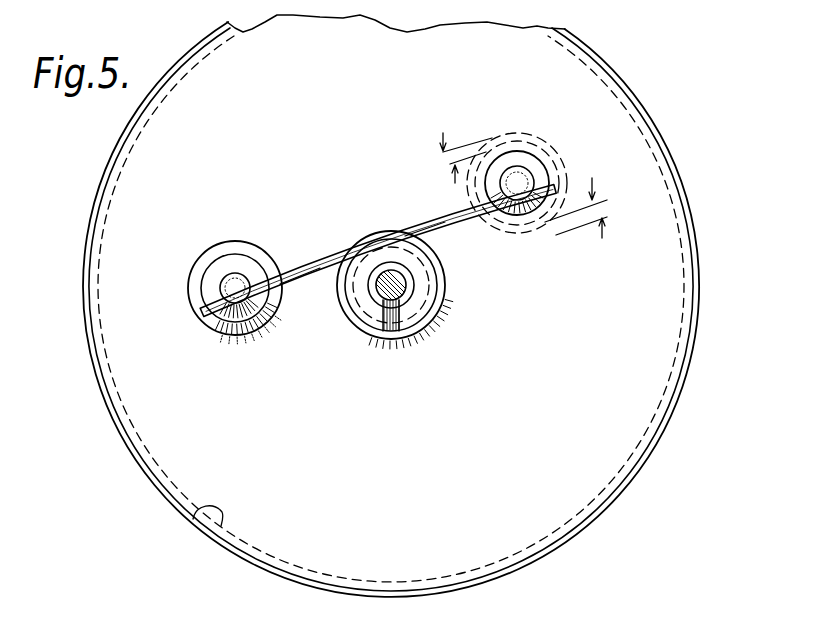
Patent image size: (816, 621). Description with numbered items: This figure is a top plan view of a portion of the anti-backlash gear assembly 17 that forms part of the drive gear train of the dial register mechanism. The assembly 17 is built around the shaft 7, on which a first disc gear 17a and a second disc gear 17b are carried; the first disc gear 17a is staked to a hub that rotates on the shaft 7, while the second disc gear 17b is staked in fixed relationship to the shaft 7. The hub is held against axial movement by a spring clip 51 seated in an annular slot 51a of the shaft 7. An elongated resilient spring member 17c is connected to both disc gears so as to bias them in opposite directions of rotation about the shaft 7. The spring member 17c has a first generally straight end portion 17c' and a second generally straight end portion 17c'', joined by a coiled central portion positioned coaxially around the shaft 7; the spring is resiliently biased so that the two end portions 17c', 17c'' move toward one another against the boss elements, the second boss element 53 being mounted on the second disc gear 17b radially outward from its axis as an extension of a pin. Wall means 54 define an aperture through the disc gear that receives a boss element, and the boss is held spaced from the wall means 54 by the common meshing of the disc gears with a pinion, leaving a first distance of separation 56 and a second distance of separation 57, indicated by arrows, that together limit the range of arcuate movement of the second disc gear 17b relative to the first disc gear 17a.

The shaft 7 is at (380, 292).
The anti-backlash gear assembly 17 is at (694, 518).
The first disc gear 17a is at (460, 491).
The second disc gear 17b is at (190, 520).
The spring member 17c is at (378, 251).
The first generally straight end portion 17c' is at (307, 233).
The second generally straight end portion 17c'' is at (394, 201).
The spring clip 51 is at (417, 300).
The annular slot 51a is at (377, 343).
The second boss element 53 is at (230, 278).
The wall means 54 is at (560, 165).
The first distance of separation 56 is at (447, 158).
The second distance of separation 57 is at (630, 205).